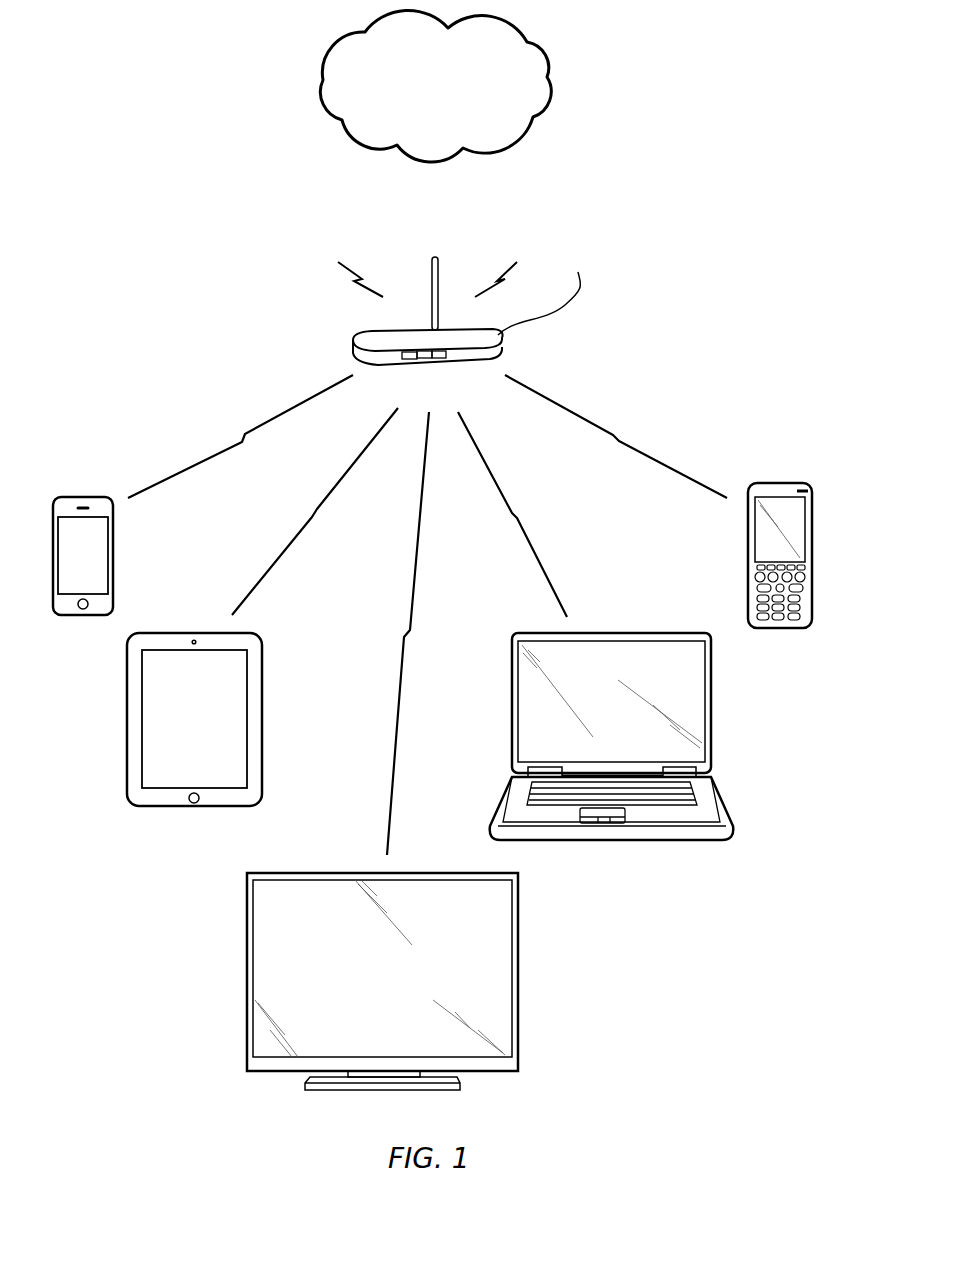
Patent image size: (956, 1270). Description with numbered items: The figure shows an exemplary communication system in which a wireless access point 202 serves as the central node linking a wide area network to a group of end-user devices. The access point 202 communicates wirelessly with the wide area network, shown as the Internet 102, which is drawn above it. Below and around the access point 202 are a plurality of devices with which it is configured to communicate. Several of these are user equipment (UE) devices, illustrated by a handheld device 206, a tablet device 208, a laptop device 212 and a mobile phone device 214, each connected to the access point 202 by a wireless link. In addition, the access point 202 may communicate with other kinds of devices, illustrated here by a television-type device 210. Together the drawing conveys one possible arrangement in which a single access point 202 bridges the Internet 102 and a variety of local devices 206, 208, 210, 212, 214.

The Internet 102 is at (452, 105).
The access point 202 is at (360, 333).
The UE device 206 is at (75, 497).
The UE device 208 is at (183, 633).
The other device 210 is at (313, 873).
The UE device 212 is at (641, 633).
The UE device 214 is at (783, 483).